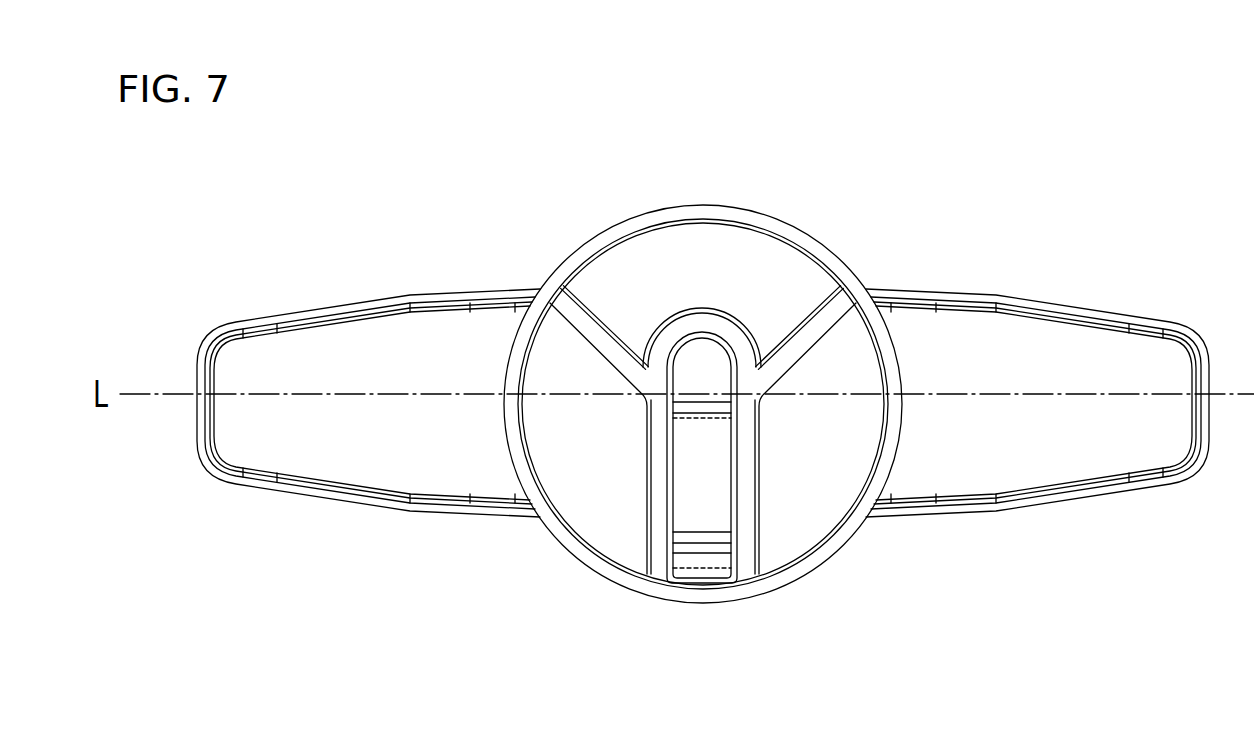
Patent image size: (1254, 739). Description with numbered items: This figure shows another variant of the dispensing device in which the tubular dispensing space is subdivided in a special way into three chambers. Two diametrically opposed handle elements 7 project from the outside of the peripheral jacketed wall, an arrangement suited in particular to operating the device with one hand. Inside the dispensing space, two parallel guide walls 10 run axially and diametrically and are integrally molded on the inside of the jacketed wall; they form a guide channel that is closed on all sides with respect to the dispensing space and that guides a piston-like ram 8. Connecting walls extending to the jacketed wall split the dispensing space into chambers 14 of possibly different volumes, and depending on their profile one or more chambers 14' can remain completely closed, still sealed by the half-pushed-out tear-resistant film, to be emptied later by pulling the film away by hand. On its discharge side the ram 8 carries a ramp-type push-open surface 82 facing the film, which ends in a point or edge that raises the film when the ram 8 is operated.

The handle element 7 is at (317, 497).
The chamber 14 is at (687, 480).
The chamber 14' is at (702, 197).
The guide wall 10 is at (663, 457).
The ram 8 is at (710, 498).
The ramp-type push-open surface 82 is at (690, 594).